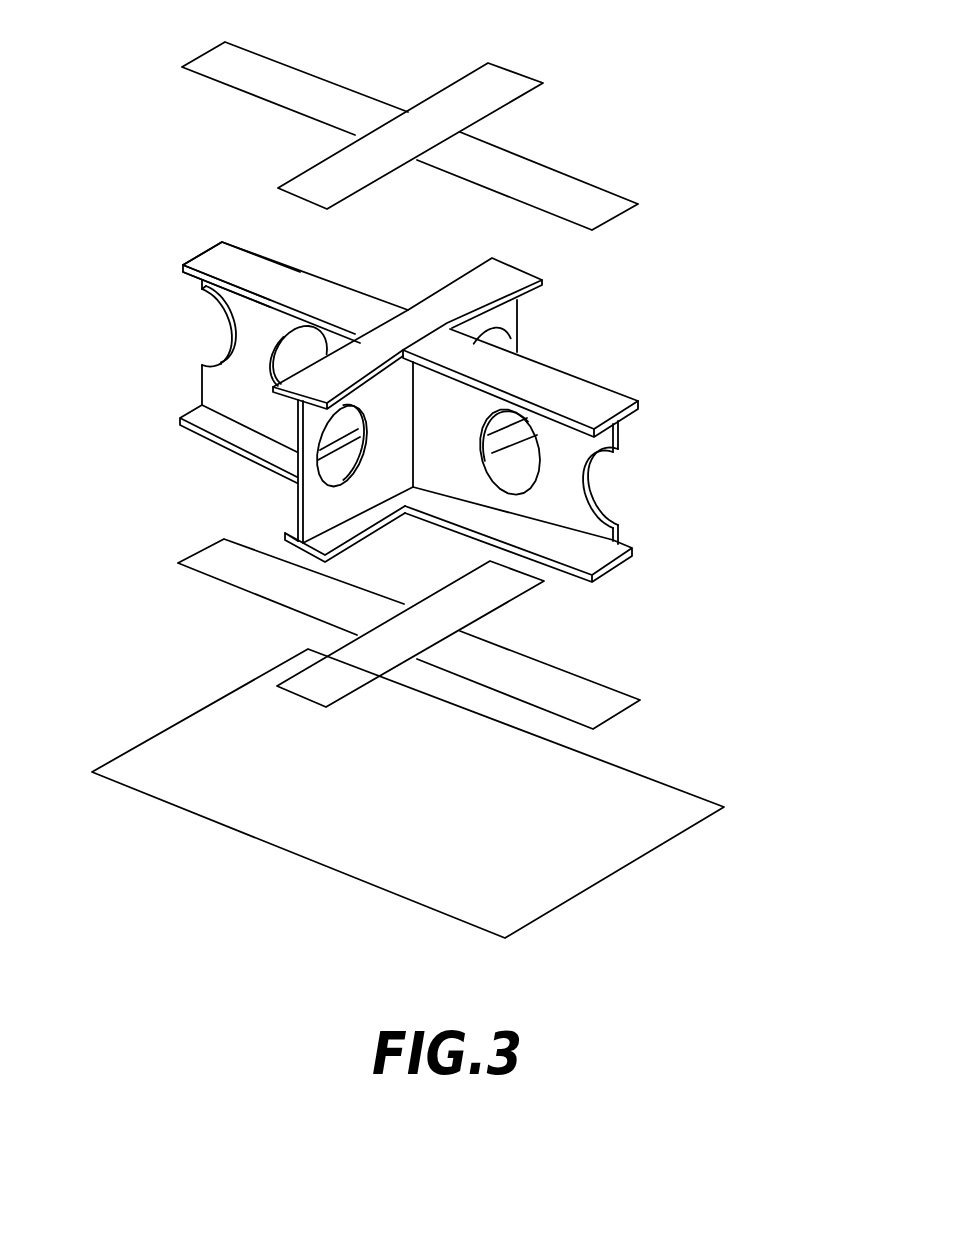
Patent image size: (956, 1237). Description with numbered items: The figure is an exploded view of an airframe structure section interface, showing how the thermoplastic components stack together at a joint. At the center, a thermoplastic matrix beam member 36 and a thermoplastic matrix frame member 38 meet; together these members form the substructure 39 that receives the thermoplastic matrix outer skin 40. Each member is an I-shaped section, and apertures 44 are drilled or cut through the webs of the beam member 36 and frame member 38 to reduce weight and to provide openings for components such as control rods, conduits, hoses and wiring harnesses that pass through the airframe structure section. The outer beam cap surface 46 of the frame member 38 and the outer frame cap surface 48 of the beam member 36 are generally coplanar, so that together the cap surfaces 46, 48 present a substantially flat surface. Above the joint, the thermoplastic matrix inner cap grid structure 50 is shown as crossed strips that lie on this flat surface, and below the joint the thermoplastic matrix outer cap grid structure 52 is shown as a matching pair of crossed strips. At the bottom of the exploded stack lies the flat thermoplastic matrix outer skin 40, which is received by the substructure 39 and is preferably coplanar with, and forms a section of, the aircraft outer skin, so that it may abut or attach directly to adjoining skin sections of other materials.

The thermoplastic matrix beam member 36 is at (417, 379).
The thermoplastic matrix frame member 38 is at (502, 288).
The substructure 39 is at (645, 472).
The thermoplastic matrix outer skin 40 is at (618, 840).
The apertures 44 is at (288, 357).
The outer beam cap surface 46 is at (462, 292).
The outer frame cap surface 48 is at (222, 240).
The thermoplastic matrix inner cap grid structure 50 is at (597, 61).
The thermoplastic matrix outer cap grid structure 52 is at (610, 654).